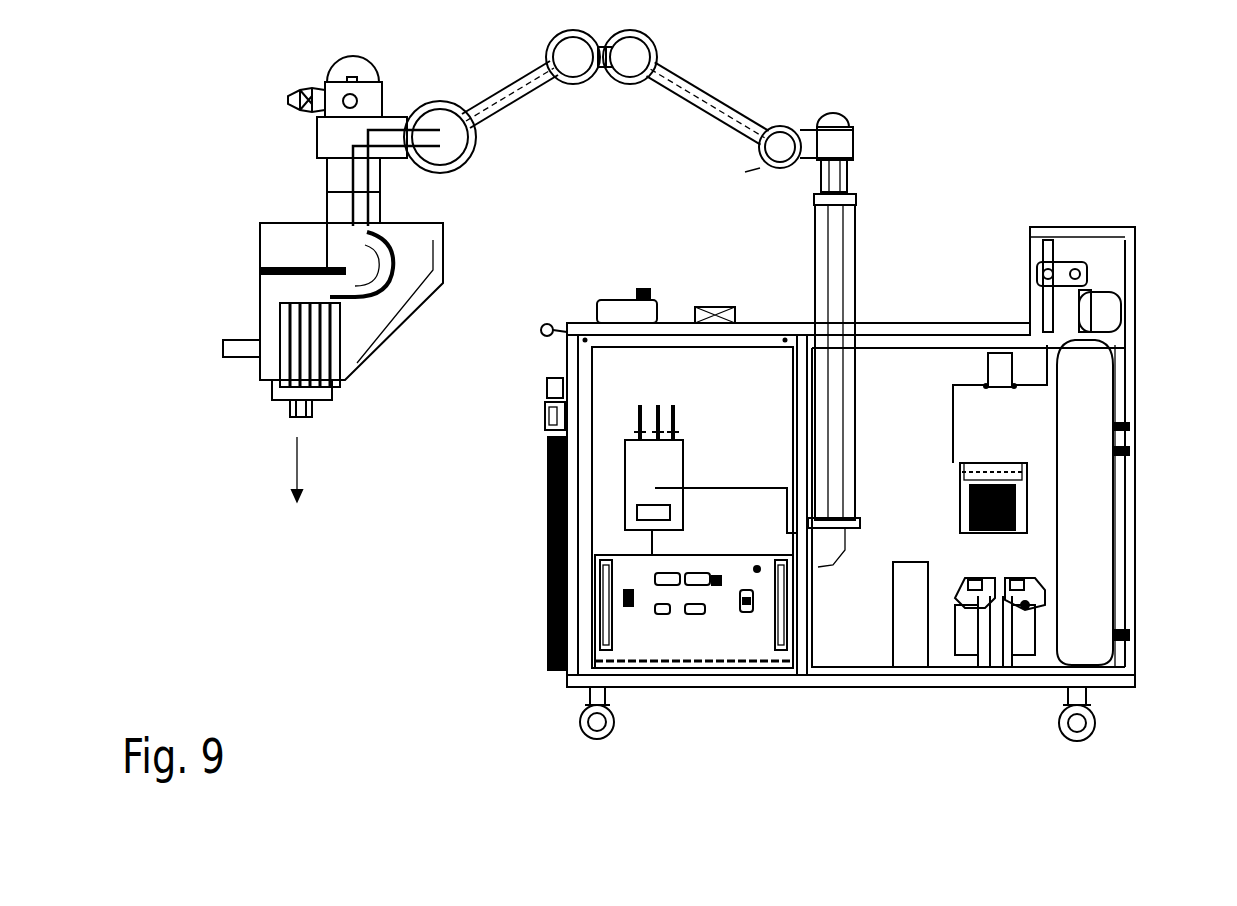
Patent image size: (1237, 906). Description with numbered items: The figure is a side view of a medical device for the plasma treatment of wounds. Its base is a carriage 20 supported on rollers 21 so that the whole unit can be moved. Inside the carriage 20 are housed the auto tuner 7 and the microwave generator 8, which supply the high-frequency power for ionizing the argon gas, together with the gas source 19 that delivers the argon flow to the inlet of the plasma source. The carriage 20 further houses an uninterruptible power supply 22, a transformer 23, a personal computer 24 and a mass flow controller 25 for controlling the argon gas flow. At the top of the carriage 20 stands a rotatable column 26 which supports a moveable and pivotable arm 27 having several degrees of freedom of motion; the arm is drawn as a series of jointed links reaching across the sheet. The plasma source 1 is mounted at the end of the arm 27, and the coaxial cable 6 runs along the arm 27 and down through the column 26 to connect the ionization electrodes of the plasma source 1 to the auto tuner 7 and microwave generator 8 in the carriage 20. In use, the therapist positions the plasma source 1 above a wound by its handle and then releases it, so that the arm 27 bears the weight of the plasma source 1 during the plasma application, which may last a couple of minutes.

The plasma source 1 is at (340, 363).
The coaxial cable 6 is at (397, 253).
The auto tuner 7 is at (642, 458).
The microwave generator 8 is at (675, 637).
The gas source 19 is at (1087, 394).
The carriage 20 is at (476, 582).
The rollers 21 is at (1095, 733).
The uninterruptible power supply (UPS) 22 is at (903, 645).
The transformer 23 is at (1020, 628).
The personal computer (PC) 24 is at (1023, 512).
The mass flow controller 25 is at (1000, 365).
The rotatable column 26 is at (857, 220).
The arm 27 is at (594, 132).